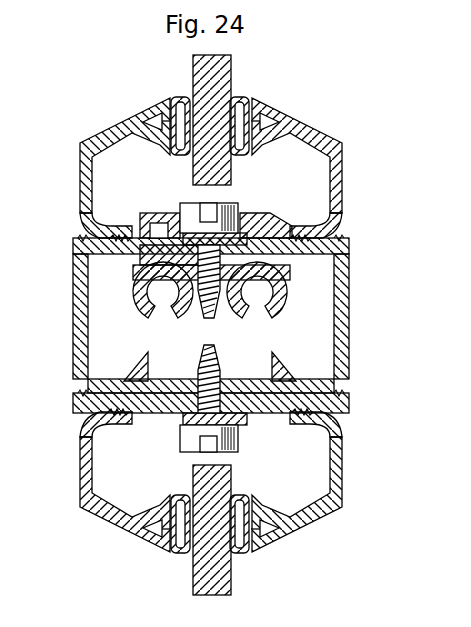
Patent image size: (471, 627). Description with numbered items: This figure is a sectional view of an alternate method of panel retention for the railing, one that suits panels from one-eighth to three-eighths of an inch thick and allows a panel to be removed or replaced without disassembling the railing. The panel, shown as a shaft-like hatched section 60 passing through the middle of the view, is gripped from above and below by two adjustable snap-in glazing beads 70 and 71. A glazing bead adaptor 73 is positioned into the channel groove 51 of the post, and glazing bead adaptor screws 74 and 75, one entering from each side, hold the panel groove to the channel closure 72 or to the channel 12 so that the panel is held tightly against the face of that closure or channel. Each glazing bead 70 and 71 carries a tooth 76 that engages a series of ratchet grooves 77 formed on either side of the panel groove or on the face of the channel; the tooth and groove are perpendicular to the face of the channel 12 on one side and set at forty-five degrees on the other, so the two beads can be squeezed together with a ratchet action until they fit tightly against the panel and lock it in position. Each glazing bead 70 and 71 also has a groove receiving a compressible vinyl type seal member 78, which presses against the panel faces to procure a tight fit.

The channel 12 is at (349, 322).
The channel groove 51 is at (170, 257).
The shaft 60 is at (231, 66).
The glazing bead 70 is at (278, 128).
The glazing bead 71 is at (294, 528).
The channel closure 72 is at (350, 405).
The glazing bead adaptor 73 is at (260, 215).
The glazing bead adaptor screw 74 is at (230, 450).
The glazing bead adaptor screw 75 is at (197, 205).
The tooth 76 is at (130, 237).
The ratchet grooves 77 is at (110, 243).
The vinyl type seal member 78 is at (248, 101).